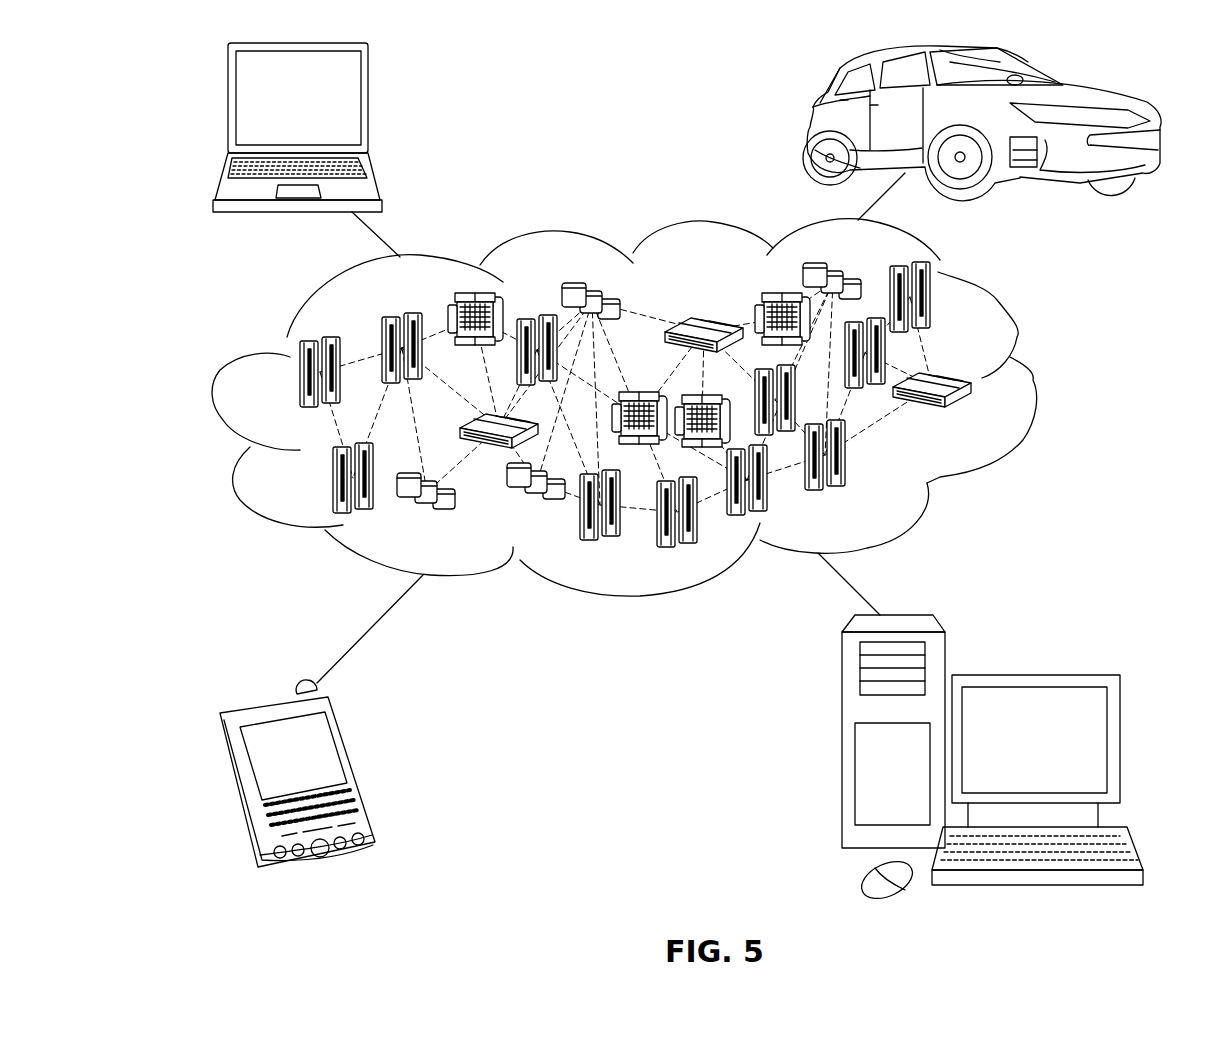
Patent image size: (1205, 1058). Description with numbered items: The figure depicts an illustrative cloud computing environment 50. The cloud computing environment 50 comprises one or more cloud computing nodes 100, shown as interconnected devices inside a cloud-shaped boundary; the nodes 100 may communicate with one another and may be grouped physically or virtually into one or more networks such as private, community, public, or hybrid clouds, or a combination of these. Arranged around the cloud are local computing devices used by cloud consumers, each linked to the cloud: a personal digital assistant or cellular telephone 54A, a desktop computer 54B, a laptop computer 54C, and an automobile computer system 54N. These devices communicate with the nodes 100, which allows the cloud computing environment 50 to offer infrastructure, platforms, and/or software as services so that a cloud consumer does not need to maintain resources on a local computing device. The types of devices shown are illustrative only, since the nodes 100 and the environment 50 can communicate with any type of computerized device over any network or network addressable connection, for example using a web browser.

The laptop computer 54C is at (370, 106).
The automobile computer system 54N is at (810, 120).
The personal digital assistant or cellular telephone 54A is at (359, 768).
The desktop computer 54B is at (1030, 675).
The cloud computing environment 50 is at (1033, 380).
The cloud computing nodes 100 is at (698, 404).